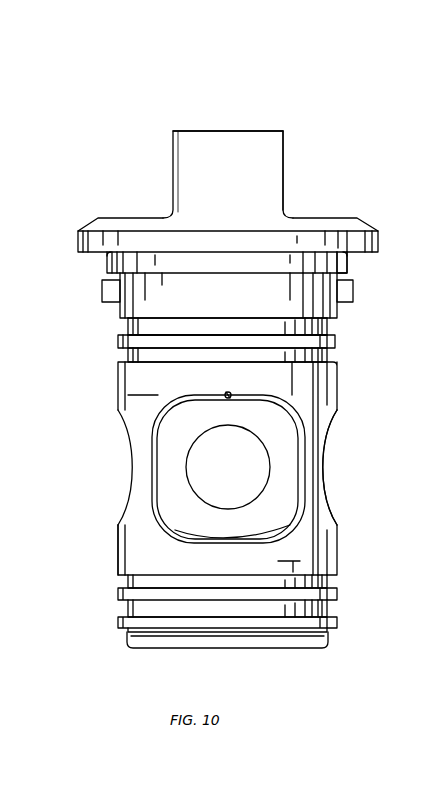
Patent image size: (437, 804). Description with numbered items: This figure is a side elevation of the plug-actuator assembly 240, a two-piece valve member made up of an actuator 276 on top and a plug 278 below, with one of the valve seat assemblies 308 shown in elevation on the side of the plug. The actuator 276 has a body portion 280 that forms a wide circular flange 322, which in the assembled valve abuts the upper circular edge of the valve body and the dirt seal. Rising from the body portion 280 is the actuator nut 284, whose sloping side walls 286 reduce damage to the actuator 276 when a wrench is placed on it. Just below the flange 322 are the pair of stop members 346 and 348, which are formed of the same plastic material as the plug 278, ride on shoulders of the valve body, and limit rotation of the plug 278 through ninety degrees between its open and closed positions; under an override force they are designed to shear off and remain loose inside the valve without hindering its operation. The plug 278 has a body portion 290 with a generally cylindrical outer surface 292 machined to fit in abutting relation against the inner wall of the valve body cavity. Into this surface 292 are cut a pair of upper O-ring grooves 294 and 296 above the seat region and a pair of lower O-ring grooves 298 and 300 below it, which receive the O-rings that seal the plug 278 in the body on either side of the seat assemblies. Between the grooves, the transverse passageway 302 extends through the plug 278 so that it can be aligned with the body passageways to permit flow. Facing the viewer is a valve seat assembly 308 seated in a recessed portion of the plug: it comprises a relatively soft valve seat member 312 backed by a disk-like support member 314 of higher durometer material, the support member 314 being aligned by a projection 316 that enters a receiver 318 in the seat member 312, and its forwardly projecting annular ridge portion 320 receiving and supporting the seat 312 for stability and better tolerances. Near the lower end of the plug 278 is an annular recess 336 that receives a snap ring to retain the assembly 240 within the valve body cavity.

The plug-actuator assembly 240 is at (130, 132).
The actuator 276 is at (165, 205).
The plug 278 is at (121, 447).
The body portion 280 is at (328, 223).
The actuator nut 284 is at (235, 130).
The sloping side walls 286 is at (285, 150).
The body portion 290 is at (216, 475).
The cylindrical outer surface 292 is at (117, 543).
The upper O-ring groove 294 is at (328, 325).
The upper O-ring groove 296 is at (328, 352).
The lower O-ring groove 298 is at (328, 577).
The lower O-ring groove 300 is at (328, 607).
The transverse passageway 302 is at (325, 466).
The valve seat assembly 308 is at (292, 402).
The valve seat member 312 is at (244, 473).
The support member 314 is at (170, 520).
The projection 316 is at (231, 393).
The receiver 318 is at (225, 393).
The annular ridge portion 320 is at (245, 549).
The circular flange 322 is at (358, 253).
The annular recess 336 is at (328, 633).
The stop member 346 is at (355, 288).
The stop member 348 is at (102, 290).